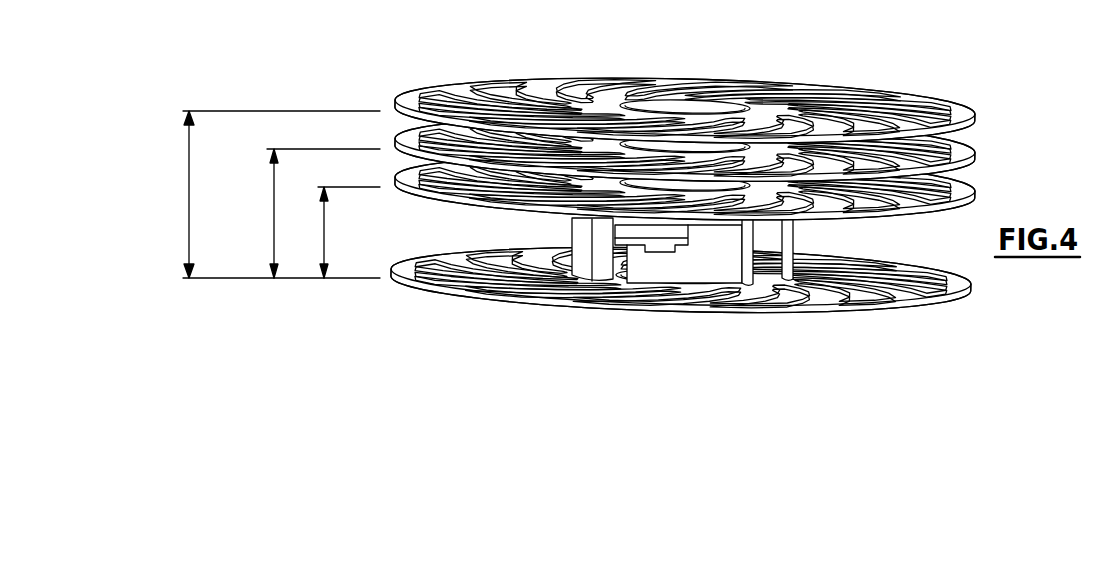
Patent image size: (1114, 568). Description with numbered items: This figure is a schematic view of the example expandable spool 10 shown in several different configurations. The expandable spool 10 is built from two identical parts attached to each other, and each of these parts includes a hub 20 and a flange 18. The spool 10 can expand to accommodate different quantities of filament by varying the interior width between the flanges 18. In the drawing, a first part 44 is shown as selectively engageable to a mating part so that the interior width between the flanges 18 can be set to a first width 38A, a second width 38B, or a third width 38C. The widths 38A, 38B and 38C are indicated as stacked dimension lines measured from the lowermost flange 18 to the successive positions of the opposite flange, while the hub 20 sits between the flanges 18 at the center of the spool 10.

The expandable spool 10 is at (730, 182).
The first part 44 is at (730, 217).
The flange 18 is at (610, 303).
The hub 20 is at (698, 270).
The first width 38A is at (324, 238).
The second width 38B is at (274, 236).
The third width 38C is at (189, 183).